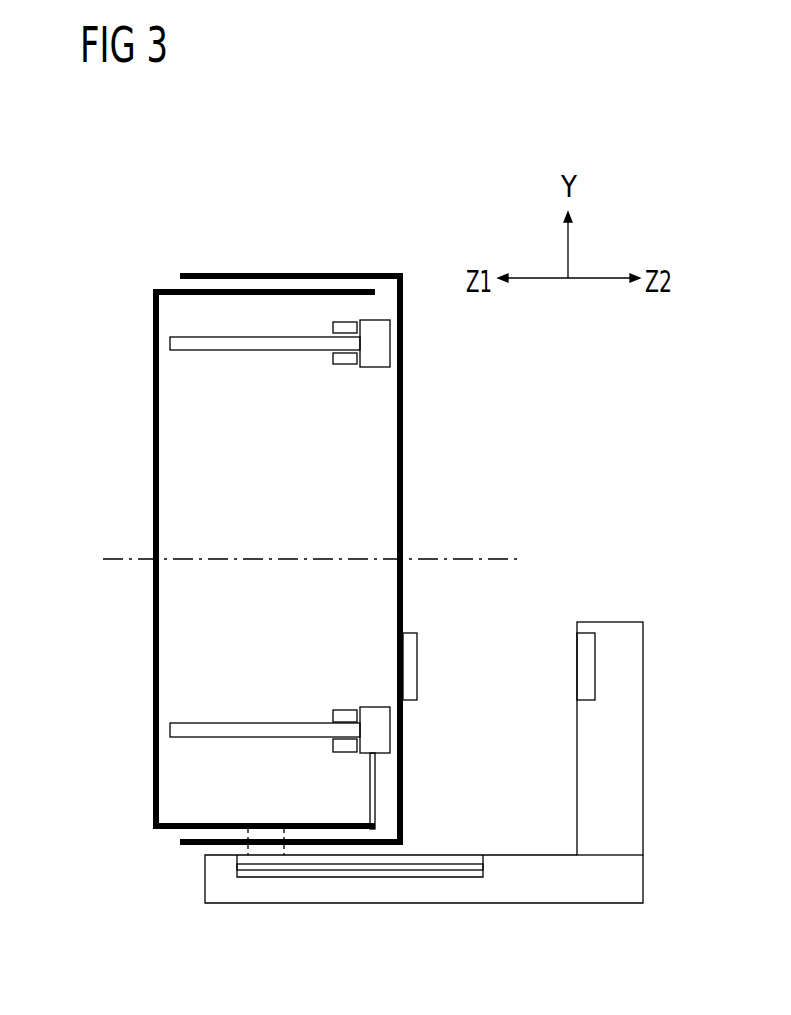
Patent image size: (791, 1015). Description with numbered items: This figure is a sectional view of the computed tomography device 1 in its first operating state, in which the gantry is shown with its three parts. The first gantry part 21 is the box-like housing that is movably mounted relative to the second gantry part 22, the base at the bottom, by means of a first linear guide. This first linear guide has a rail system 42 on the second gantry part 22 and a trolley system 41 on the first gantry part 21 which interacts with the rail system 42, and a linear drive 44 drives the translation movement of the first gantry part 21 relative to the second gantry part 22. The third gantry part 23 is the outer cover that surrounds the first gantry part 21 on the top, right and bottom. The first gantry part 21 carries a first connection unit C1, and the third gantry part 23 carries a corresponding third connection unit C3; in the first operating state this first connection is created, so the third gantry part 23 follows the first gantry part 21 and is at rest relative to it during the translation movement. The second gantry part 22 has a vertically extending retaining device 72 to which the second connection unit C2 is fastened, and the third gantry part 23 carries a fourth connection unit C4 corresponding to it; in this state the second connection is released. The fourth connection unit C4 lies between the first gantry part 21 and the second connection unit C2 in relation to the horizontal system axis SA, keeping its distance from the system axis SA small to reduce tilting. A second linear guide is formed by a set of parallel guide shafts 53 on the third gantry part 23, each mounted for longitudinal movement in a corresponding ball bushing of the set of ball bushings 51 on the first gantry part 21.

The computed tomography device 1 is at (487, 125).
The first gantry part 21 is at (152, 455).
The second gantry part 22 is at (540, 888).
The third gantry part 23 is at (268, 272).
The trolley system 41 is at (267, 850).
The rail system 42 is at (397, 872).
The linear drive 44 is at (340, 864).
The set of ball bushings 51 is at (343, 326).
The set of parallel guide shafts 53 is at (172, 343).
The retaining device 72 is at (635, 733).
The system axis SA is at (470, 557).
The first connection unit C1 is at (375, 785).
The second connection unit C2 is at (587, 667).
The third connection unit C3 is at (383, 732).
The fourth connection unit C4 is at (410, 667).